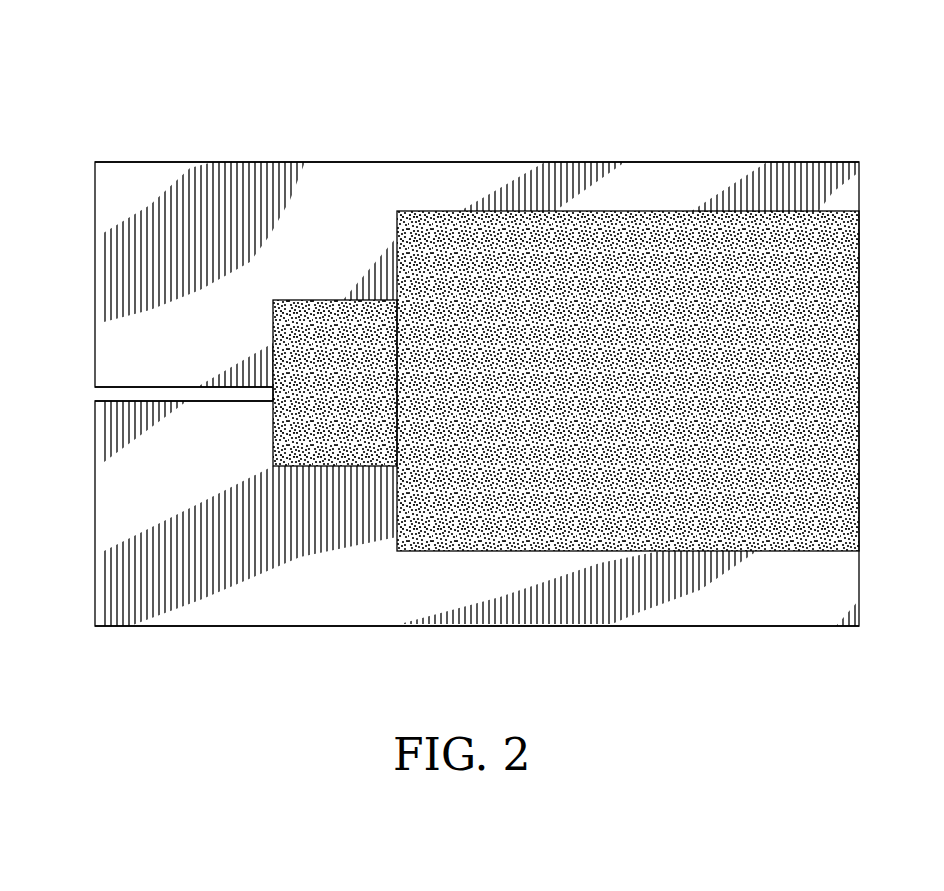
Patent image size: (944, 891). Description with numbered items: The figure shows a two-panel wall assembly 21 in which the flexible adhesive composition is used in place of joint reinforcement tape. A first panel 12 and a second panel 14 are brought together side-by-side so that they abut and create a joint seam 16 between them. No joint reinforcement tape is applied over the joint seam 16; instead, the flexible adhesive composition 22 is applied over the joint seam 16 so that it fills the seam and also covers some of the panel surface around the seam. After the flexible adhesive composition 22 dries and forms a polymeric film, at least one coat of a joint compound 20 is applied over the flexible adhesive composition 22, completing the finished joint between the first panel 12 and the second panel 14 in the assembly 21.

The two-panel assembly 21 is at (62, 144).
The first panel 12 is at (832, 190).
The second panel 14 is at (832, 602).
The joint seam 16 is at (99, 394).
The joint compound 20 is at (612, 242).
The flexible adhesive composition 22 is at (325, 322).